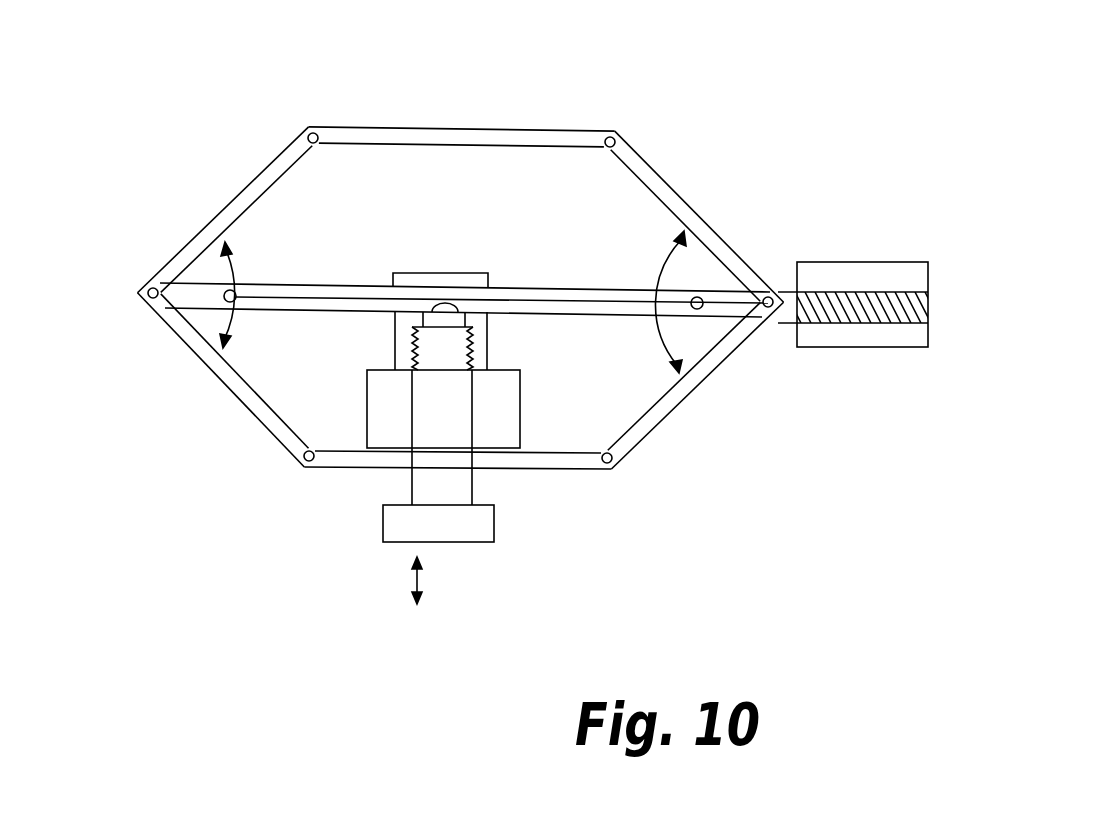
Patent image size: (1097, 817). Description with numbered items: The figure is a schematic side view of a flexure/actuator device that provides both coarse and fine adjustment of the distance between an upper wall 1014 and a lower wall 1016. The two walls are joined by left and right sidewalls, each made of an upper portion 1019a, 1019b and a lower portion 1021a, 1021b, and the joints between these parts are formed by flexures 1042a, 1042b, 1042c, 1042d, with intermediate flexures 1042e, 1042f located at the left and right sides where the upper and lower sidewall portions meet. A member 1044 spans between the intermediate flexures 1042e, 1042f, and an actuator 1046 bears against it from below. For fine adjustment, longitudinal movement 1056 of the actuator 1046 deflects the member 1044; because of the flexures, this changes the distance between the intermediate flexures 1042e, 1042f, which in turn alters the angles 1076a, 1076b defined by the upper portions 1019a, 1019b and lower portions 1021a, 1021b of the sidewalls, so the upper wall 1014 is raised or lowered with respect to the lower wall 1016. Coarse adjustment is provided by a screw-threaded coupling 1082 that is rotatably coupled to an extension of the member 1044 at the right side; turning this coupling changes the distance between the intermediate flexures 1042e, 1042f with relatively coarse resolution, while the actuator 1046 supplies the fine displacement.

The upper wall 1014 is at (355, 127).
The lower wall 1016 is at (312, 468).
The upper portion of left sidewall 1019a is at (235, 197).
The upper portion of right sidewall 1019b is at (668, 182).
The lower portion of left sidewall 1021a is at (218, 382).
The lower portion of right sidewall 1021b is at (670, 418).
The flexure 1042a is at (308, 127).
The flexure 1042b is at (615, 130).
The flexure 1042c is at (303, 465).
The flexure 1042d is at (613, 472).
The intermediate flexure 1042e is at (137, 293).
The intermediate flexure 1042f is at (783, 290).
The member 1044 is at (302, 283).
The actuator 1046 is at (472, 488).
The longitudinal movement 1056 is at (420, 582).
The angle 1076a is at (240, 272).
The angle 1076b is at (662, 267).
The screw-threaded coupling 1082 is at (808, 347).